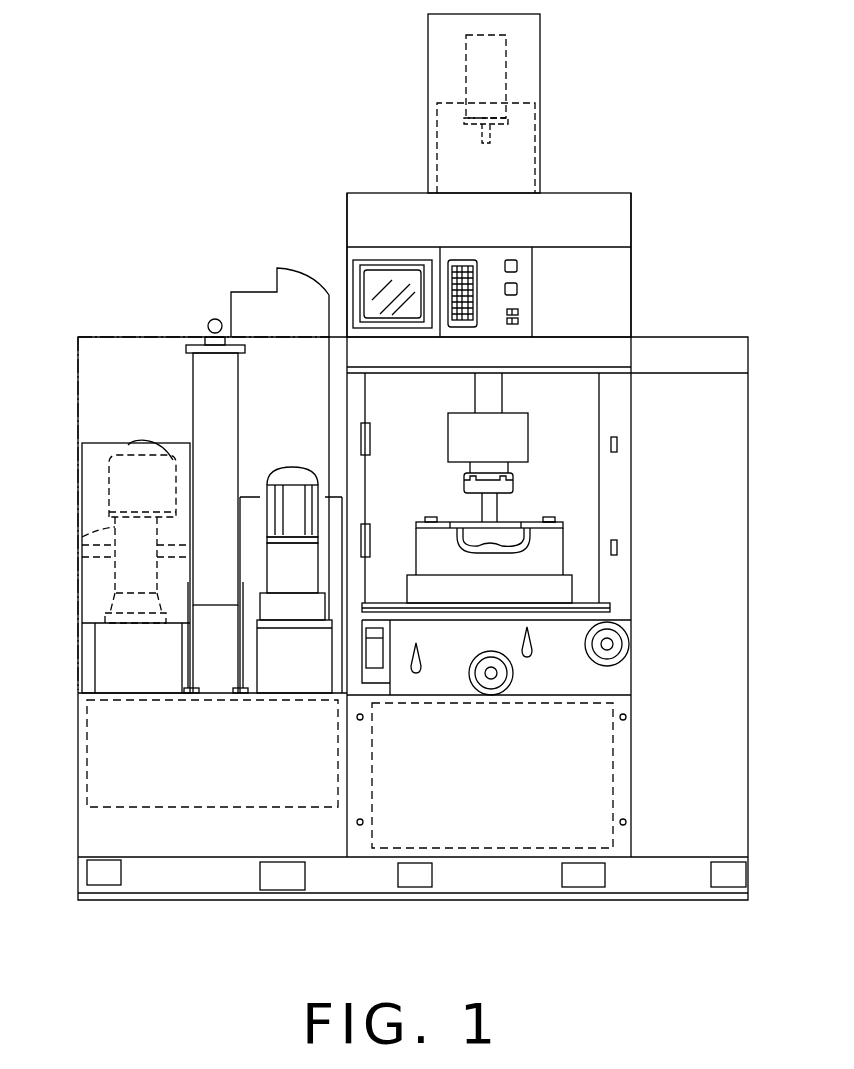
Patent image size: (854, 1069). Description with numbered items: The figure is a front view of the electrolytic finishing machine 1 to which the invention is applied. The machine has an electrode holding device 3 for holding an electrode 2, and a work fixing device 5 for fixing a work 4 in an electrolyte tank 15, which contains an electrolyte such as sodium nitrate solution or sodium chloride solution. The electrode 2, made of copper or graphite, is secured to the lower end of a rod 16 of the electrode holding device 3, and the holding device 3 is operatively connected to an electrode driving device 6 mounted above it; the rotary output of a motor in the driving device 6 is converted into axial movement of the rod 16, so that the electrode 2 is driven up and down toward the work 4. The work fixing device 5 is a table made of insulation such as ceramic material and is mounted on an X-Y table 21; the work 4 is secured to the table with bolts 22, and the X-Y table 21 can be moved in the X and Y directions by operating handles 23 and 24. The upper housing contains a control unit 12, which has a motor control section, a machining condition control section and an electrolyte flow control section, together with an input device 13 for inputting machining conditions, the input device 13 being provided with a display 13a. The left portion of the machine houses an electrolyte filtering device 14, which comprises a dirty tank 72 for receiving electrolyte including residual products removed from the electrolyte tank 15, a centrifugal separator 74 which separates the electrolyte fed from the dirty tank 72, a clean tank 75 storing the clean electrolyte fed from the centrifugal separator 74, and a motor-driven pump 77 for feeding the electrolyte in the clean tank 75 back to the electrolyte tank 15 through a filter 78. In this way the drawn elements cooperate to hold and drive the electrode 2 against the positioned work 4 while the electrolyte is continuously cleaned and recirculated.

The electrolytic finishing machine 1 is at (634, 88).
The electrode 2 is at (505, 532).
The electrode holding device 3 is at (515, 484).
The work 4 is at (565, 535).
The work fixing device 5 is at (575, 588).
The electrode driving device 6 is at (506, 78).
The control unit 12 is at (710, 388).
The input device 13 is at (505, 303).
The display 13a is at (356, 280).
The electrolyte filtering device 14 is at (81, 336).
The electrolyte tank 15 is at (363, 398).
The rod 16 is at (483, 503).
The X-Y table 21 is at (630, 685).
The bolts 22 is at (549, 519).
The handle 23 is at (629, 637).
The handle 24 is at (480, 695).
The dirty tank 72 is at (533, 858).
The centrifugal separator 74 is at (84, 536).
The clean tank 75 is at (86, 778).
The pump 77 is at (258, 657).
The filter 78 is at (192, 403).